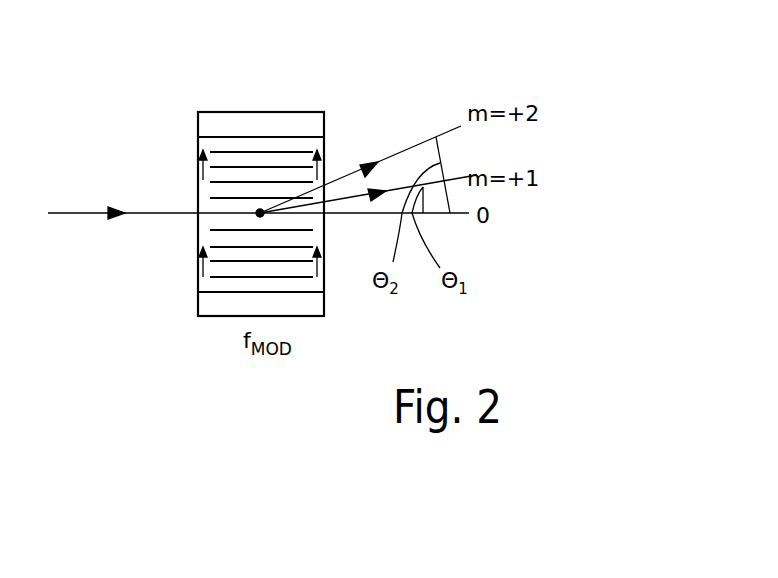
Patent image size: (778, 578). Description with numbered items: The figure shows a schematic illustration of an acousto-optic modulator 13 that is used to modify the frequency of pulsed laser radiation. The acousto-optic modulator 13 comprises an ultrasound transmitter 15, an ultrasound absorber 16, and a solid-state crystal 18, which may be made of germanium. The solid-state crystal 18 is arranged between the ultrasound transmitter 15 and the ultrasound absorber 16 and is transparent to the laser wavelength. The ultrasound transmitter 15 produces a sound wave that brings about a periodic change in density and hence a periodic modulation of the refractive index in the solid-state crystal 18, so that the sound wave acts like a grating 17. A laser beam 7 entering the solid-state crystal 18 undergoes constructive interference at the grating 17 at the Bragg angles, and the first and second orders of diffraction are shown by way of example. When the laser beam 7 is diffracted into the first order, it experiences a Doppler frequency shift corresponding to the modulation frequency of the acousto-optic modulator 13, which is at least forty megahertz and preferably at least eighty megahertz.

The laser beam 7 is at (80, 213).
The acousto-optic modulator 13 is at (160, 105).
The ultrasound transmitter 15 is at (213, 308).
The ultrasound absorber 16 is at (303, 122).
The grating 17 is at (228, 243).
The solid-state crystal 18 is at (203, 203).